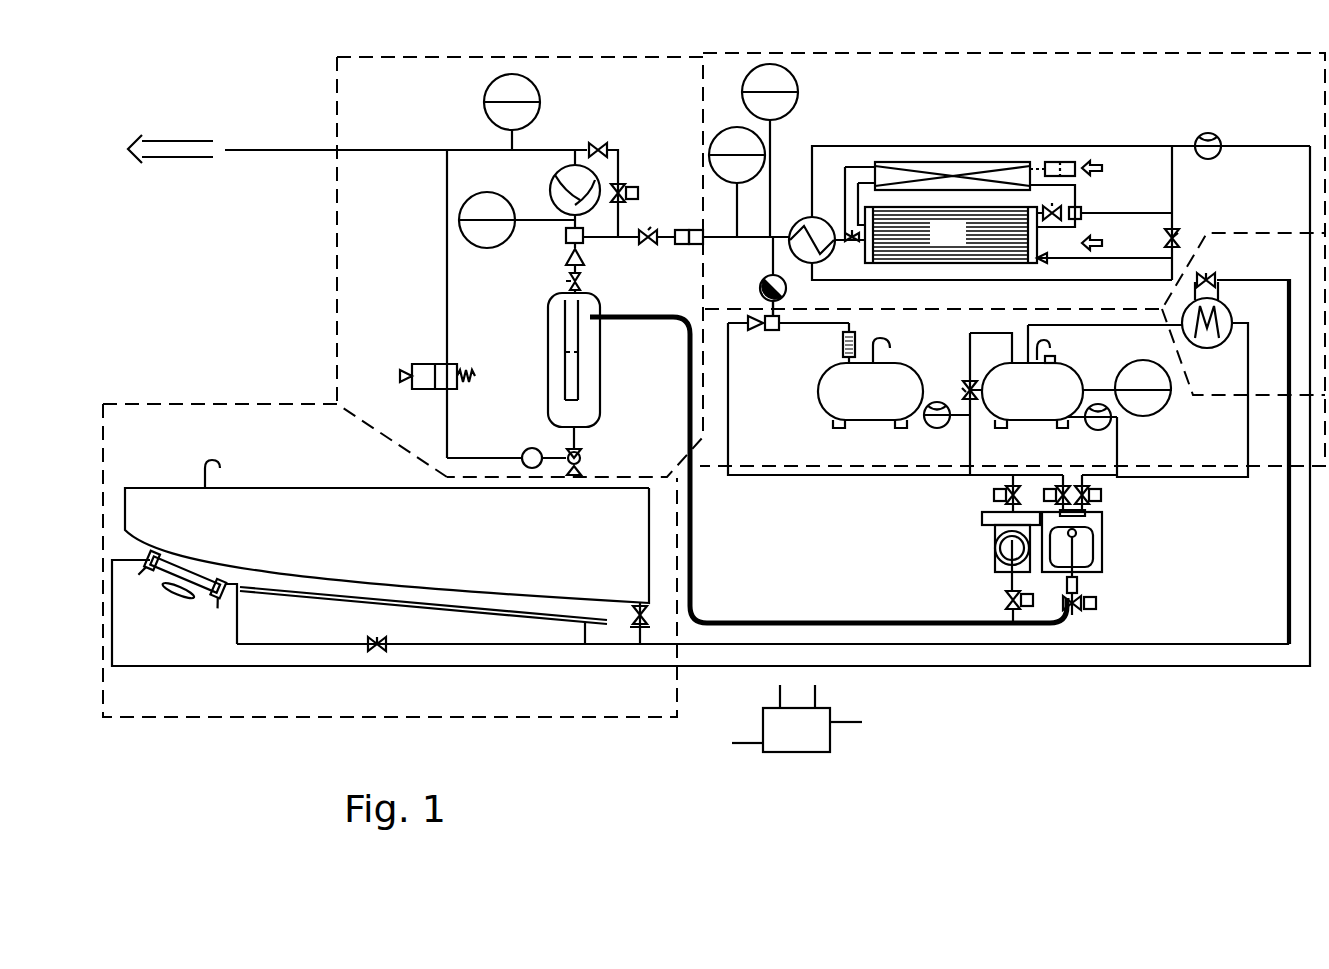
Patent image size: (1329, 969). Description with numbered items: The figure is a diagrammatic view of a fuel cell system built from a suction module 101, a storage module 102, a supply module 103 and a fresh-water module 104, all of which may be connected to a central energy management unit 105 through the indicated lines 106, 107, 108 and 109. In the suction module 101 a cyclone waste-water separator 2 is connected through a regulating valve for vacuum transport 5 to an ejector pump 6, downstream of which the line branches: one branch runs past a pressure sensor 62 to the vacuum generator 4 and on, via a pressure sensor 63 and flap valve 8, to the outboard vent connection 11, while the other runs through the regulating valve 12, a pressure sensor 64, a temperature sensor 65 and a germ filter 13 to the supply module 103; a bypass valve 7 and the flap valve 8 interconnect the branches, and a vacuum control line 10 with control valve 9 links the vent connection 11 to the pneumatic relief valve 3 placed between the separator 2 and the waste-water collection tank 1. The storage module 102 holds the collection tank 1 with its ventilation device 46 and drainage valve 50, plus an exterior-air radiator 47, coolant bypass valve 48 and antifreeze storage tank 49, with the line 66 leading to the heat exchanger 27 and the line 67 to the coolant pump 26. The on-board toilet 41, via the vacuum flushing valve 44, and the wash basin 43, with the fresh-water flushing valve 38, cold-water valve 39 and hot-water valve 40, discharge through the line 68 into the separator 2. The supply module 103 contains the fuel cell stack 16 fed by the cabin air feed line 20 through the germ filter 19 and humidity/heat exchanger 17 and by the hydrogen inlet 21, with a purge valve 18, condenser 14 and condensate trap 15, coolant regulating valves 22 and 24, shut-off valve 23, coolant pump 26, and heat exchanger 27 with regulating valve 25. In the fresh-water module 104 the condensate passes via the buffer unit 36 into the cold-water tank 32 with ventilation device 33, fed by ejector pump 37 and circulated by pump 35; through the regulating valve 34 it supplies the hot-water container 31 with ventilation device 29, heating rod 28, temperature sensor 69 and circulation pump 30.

The waste-water collection tank 1 is at (387, 545).
The cyclone waste-water separator 2 is at (597, 398).
The pneumatic relief valve 3 is at (582, 455).
The vacuum generator 4 is at (570, 200).
The regulating valve for vacuum transport 5 is at (580, 282).
The ejector pump 6 is at (565, 256).
The bypass valve 7 is at (640, 193).
The flap valve 8 is at (600, 148).
The control valve 9 is at (402, 374).
The vacuum control line 10 is at (447, 280).
The outboard vent connection 11 is at (418, 150).
The regulating valve for the airstream through the fuel cell 12 is at (652, 237).
The germ filter 13 is at (690, 245).
The condenser 14 is at (805, 222).
The condensate trap 15 is at (762, 285).
The fuel cell stack 16 is at (951, 235).
The humidity/heat exchanger 17 is at (950, 162).
The purge valve 18 is at (850, 244).
The germ filter 19 is at (1062, 162).
The cabin air feed line 20 is at (1108, 169).
The hydrogen inlet 21 is at (1109, 244).
The regulating valve of the cooling system 22 is at (1062, 212).
The shut-off valve 23 is at (1050, 258).
The bypass control of the cooling system 24 is at (1178, 238).
The regulating valve 25 is at (1212, 278).
The coolant pump 26 is at (1218, 155).
The heat exchanger 27 is at (1212, 350).
The electrical booster heating rod 28 is at (1058, 360).
The ventilation device 29 is at (1050, 340).
The circulation pump 30 is at (1112, 425).
The non-pressurised buffer container 31 is at (1026, 395).
The cold-water buffer tank 32 is at (870, 395).
The ventilation device 33 is at (880, 345).
The regulating valve 34 is at (962, 388).
The circulation pump 35 is at (928, 425).
The salination- and pH buffer unit 36 is at (842, 350).
The ejector pump 37 is at (758, 330).
The fresh-water flushing valve 38 is at (994, 496).
The cold-water valve 39 is at (1045, 492).
The hot-water valve 40 is at (1101, 495).
The on-board toilet 41 is at (995, 548).
The wash basin 43 is at (1102, 548).
The vacuum flushing valve 44 is at (1005, 600).
The ventilation device 46 is at (220, 466).
The exterior-air radiator 47 is at (195, 594).
The coolant bypass valve 48 is at (372, 648).
The antifreeze storage tank 49 is at (495, 614).
The waste-water drainage valve 50 is at (640, 630).
The pressure sensor 62 is at (502, 247).
The pressure sensor 63 is at (540, 100).
The pressure sensor 64 is at (710, 155).
The temperature sensor 65 is at (798, 92).
The line 66 is at (1040, 646).
The line 67 is at (1140, 668).
The line 68 is at (975, 628).
The temperature sensor 69 is at (1172, 398).
The suction module 101 is at (337, 312).
The storage module 102 is at (243, 402).
The supply module 103 is at (962, 52).
The fresh-water module 104 is at (1152, 468).
The energy management unit 105 is at (813, 750).
The line 106 is at (818, 692).
The line 107 is at (778, 692).
The line 108 is at (740, 743).
The line 109 is at (855, 722).